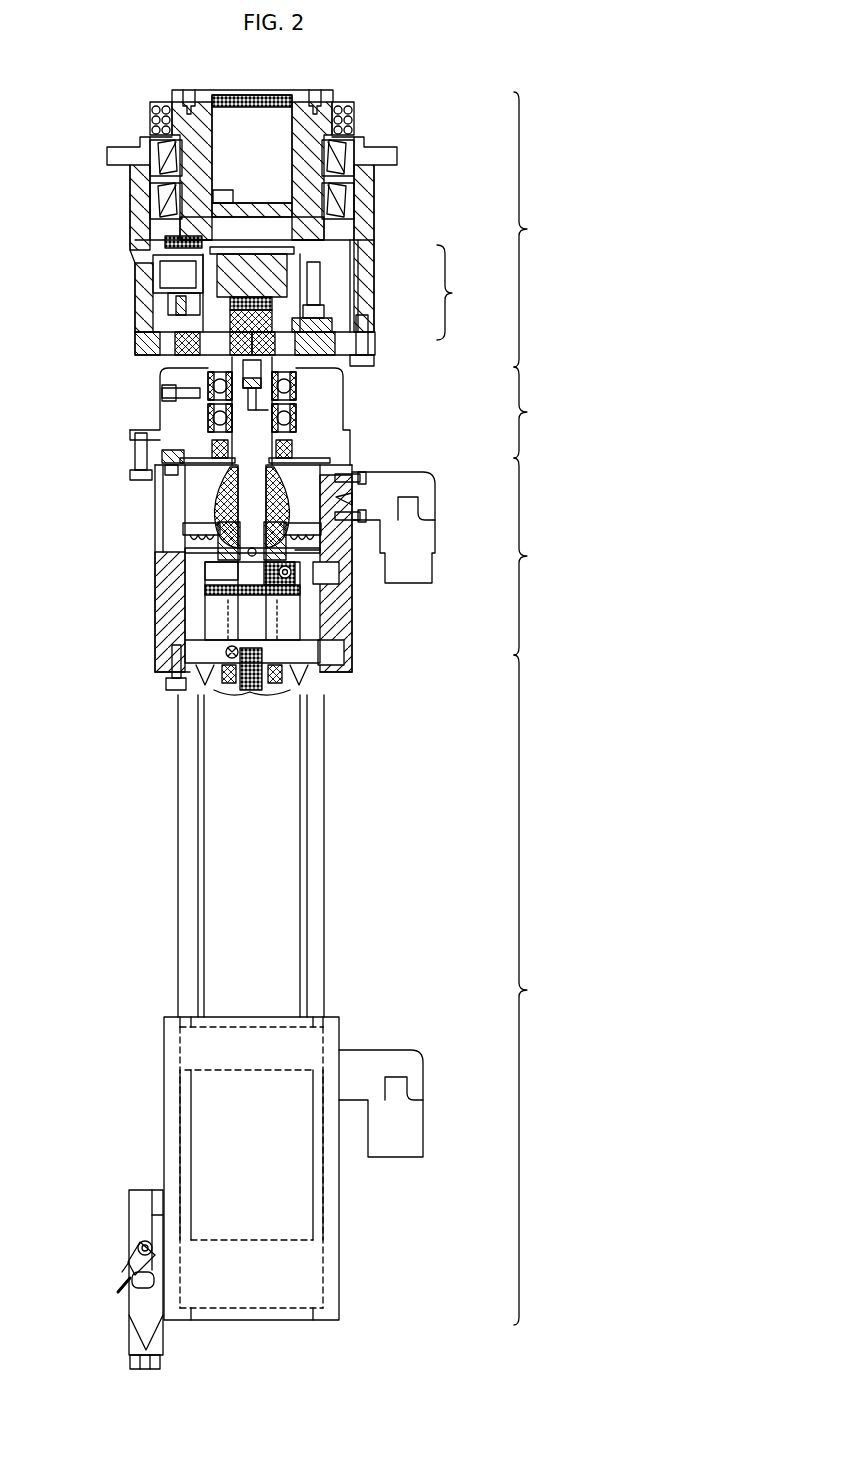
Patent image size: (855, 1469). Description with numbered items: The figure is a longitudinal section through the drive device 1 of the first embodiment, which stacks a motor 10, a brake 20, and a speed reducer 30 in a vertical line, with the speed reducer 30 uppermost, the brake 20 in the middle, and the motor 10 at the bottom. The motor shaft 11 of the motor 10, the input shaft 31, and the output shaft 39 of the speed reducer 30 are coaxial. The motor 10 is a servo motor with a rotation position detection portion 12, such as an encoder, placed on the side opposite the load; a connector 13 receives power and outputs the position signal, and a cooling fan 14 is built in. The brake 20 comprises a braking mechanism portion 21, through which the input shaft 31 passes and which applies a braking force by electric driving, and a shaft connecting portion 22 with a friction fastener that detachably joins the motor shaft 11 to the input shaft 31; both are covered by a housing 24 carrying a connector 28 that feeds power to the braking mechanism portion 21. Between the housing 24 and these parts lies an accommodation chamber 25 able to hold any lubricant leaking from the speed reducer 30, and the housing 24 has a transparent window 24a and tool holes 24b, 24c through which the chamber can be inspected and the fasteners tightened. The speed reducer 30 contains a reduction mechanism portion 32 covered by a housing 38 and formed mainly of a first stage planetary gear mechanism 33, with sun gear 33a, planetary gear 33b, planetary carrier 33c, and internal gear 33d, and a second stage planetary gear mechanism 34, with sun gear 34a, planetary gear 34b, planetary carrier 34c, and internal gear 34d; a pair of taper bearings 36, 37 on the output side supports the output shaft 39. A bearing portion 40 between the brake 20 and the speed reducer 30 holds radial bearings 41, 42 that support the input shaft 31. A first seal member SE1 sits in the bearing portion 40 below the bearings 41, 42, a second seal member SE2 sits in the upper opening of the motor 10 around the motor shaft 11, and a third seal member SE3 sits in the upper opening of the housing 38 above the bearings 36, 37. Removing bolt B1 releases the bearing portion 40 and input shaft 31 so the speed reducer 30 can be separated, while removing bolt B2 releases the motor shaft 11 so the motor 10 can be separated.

The drive device 1 is at (560, 94).
The motor 10 is at (537, 990).
The motor shaft 11 is at (248, 660).
The rotation position detection portion 12 is at (322, 1042).
The connector 13 is at (410, 1128).
The cooling fan 14 is at (318, 1275).
The brake 20 is at (537, 556).
The braking mechanism portion 21 is at (300, 480).
The shaft connecting portion 22 is at (200, 652).
The housing 24 is at (170, 600).
The transparent window 24a is at (195, 540).
The tool hole 24b is at (340, 575).
The tool hole 24c is at (345, 652).
The accommodation chamber 25 is at (215, 580).
The connector 28 is at (425, 535).
The speed reducer 30 is at (537, 229).
The input shaft 31 is at (205, 555).
The reduction mechanism portion 32 is at (460, 292).
The first stage planetary gear mechanism 33 is at (346, 346).
The sun gear 33a is at (265, 345).
The planetary gear 33b is at (200, 392).
The planetary carrier 33c is at (305, 345).
The internal gear 33d is at (150, 345).
The second stage planetary gear mechanism 34 is at (336, 273).
The sun gear 34a is at (190, 343).
The planetary gear 34b is at (180, 300).
The planetary carrier 34c is at (170, 244).
The internal gear 34d is at (172, 270).
The bearing 36 is at (158, 150).
The bearing 37 is at (160, 200).
The housing 38 is at (366, 160).
The output shaft 39 is at (330, 100).
The bearing portion 40 is at (537, 412).
The bearing 41 is at (210, 392).
The bearing 42 is at (210, 420).
The bolt B1 is at (140, 468).
The bolt B2 is at (170, 688).
The first seal member SE1 is at (222, 505).
The second seal member SE2 is at (226, 682).
The third seal member SE3 is at (155, 128).